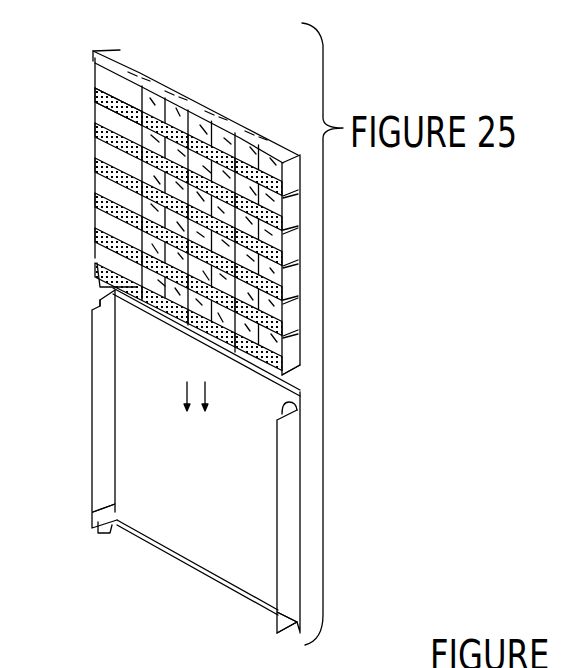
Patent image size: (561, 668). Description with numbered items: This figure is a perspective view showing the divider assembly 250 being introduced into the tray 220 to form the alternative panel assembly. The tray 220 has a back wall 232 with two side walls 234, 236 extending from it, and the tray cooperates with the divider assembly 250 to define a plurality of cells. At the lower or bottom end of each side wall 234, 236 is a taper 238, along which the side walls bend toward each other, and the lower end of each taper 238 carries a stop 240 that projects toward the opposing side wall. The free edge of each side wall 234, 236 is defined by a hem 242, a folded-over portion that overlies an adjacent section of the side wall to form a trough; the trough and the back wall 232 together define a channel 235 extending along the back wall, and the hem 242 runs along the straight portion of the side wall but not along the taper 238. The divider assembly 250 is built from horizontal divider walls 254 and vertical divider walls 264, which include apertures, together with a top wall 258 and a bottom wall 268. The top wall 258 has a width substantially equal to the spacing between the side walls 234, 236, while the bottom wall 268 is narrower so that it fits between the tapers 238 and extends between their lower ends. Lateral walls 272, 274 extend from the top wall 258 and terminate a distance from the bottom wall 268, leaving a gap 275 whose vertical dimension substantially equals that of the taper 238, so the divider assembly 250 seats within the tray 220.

The tray 220 is at (306, 475).
The back wall 232 is at (220, 470).
The side wall 234 is at (92, 327).
The channel 235 is at (100, 398).
The side wall 236 is at (293, 543).
The taper 238 is at (290, 627).
The stop 240 is at (107, 533).
The hem 242 is at (92, 445).
The divider assembly 250 is at (307, 252).
The horizontal divider wall 254 is at (100, 195).
The top wall 258 is at (124, 72).
The vertical divider wall 264 is at (190, 124).
The bottom wall 268 is at (100, 265).
The lateral wall 272 is at (100, 117).
The lateral wall 274 is at (290, 178).
The gap 275 is at (295, 360).